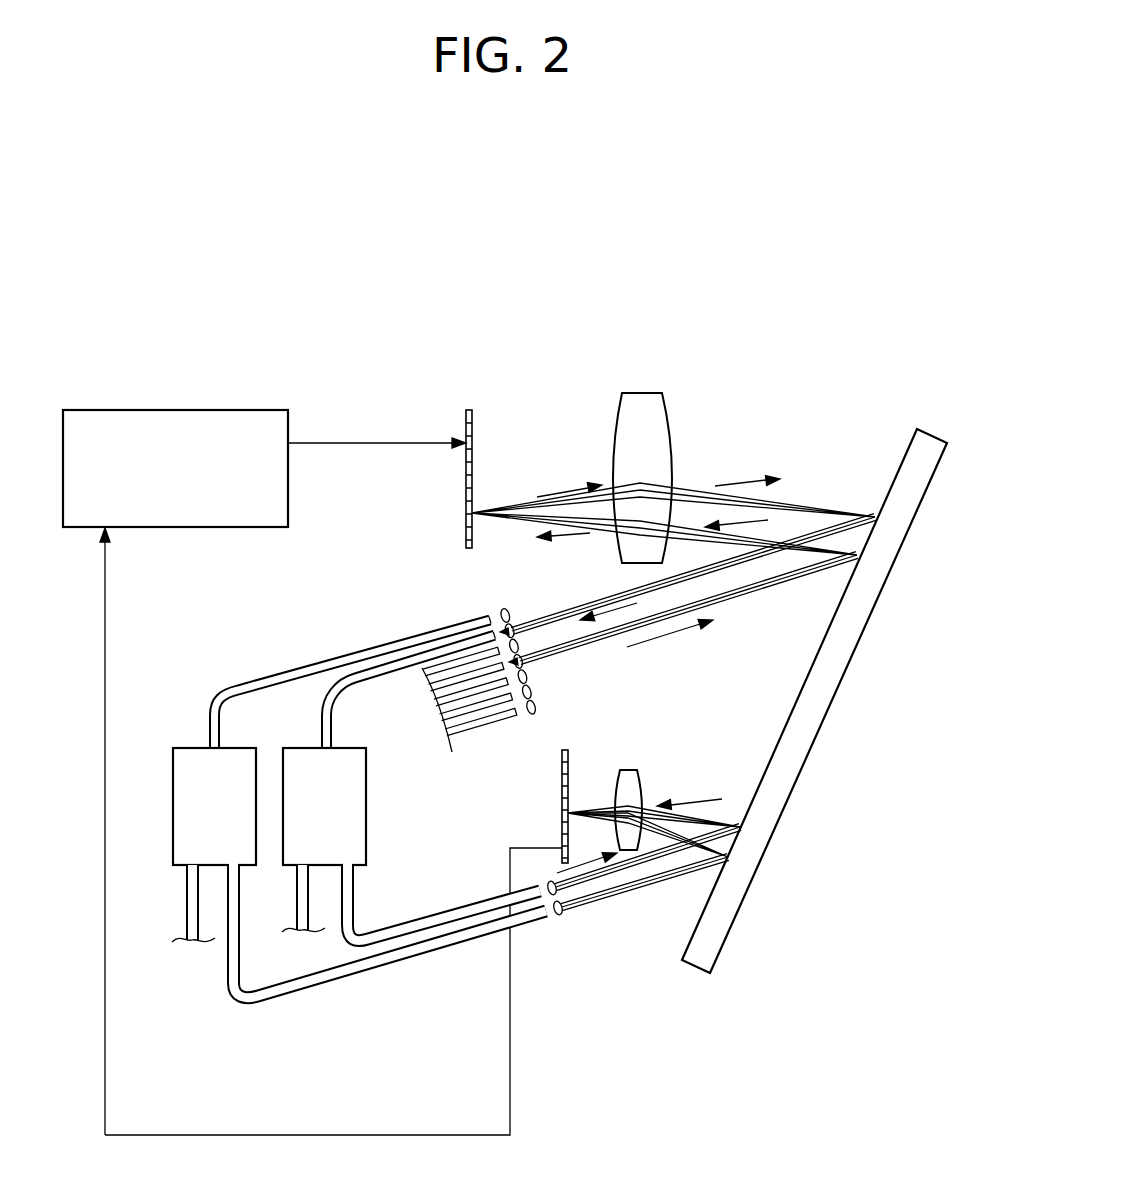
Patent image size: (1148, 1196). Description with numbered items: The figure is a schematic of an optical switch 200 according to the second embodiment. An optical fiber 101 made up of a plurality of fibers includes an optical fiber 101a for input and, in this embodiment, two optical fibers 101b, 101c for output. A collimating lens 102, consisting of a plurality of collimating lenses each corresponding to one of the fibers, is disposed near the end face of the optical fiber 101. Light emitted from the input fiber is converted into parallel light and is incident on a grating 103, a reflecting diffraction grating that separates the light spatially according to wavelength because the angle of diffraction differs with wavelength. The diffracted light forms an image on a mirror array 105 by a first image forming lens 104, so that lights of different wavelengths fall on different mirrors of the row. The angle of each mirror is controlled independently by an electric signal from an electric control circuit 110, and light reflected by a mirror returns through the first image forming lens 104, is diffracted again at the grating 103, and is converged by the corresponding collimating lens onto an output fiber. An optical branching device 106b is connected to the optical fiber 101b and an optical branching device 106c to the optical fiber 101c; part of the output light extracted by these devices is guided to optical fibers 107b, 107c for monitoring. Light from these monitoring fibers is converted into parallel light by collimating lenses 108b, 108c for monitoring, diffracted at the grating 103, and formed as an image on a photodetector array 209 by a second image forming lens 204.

The optical switch 200 is at (476, 286).
The electric control circuit 110 is at (230, 410).
The mirror array 105 is at (465, 408).
The first image forming lens 104 is at (641, 390).
The grating 103 is at (745, 900).
The optical fiber 101 is at (361, 682).
The optical fiber for input 101a is at (422, 690).
The optical fiber for output 101b is at (352, 660).
The optical fiber for output 101c is at (247, 690).
The collimating lens 102 is at (503, 610).
The optical branching device 106b is at (318, 866).
The optical branching device 106c is at (183, 748).
The optical fiber for monitoring 107b is at (438, 925).
The optical fiber for monitoring 107c is at (430, 955).
The collimating lens for monitoring 108b is at (548, 880).
The collimating lens for monitoring 108c is at (561, 916).
The photodetector array 209 is at (560, 767).
The second image forming lens 204 is at (628, 770).